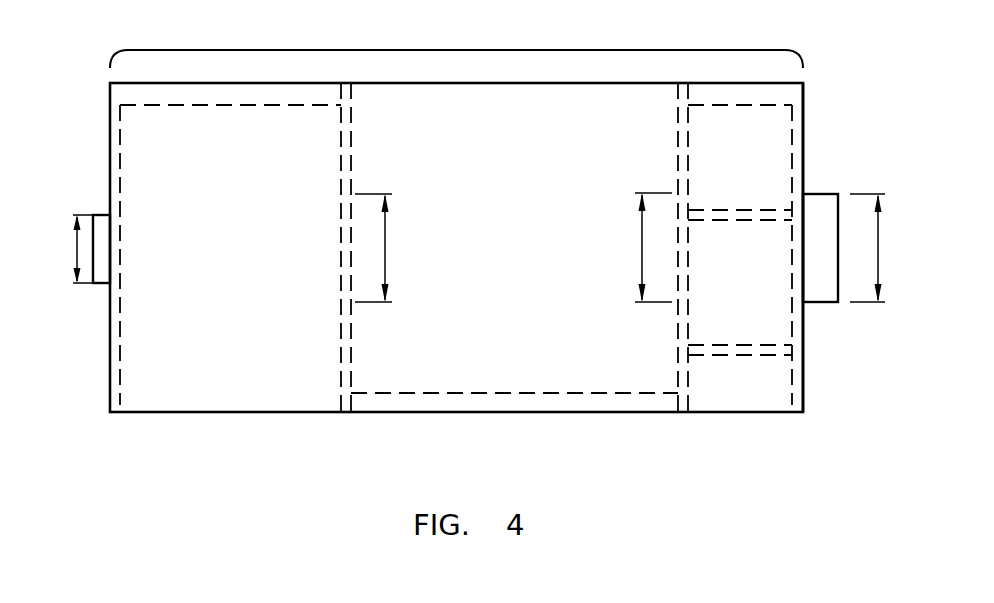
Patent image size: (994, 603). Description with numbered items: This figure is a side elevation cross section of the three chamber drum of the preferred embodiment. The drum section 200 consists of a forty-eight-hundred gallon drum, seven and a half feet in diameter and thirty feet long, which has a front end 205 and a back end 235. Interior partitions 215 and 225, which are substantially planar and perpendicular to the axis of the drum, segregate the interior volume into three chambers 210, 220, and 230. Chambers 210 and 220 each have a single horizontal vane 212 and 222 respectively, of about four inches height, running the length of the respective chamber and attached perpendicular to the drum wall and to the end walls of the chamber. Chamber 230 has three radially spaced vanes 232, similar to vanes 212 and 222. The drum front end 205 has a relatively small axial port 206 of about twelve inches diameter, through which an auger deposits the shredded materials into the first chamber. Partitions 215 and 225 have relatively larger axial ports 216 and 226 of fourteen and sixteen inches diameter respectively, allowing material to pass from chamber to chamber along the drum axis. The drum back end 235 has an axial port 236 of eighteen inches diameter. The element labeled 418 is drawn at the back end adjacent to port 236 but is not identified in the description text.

The drum section 200 is at (438, 50).
The front end 205 is at (110, 150).
The axial port 206 is at (76, 250).
The chamber 210 is at (223, 376).
The horizontal vane 212 is at (177, 106).
The interior partition 215 is at (341, 175).
The axial port 216 is at (392, 243).
The chamber 220 is at (463, 372).
The horizontal vane 222 is at (578, 393).
The interior partition 225 is at (678, 125).
The axial port 226 is at (641, 243).
The chamber 230 is at (733, 382).
The vanes 232 is at (725, 107).
The back end 235 is at (803, 128).
The axial port 236 is at (878, 250).
The connector 418 is at (822, 303).